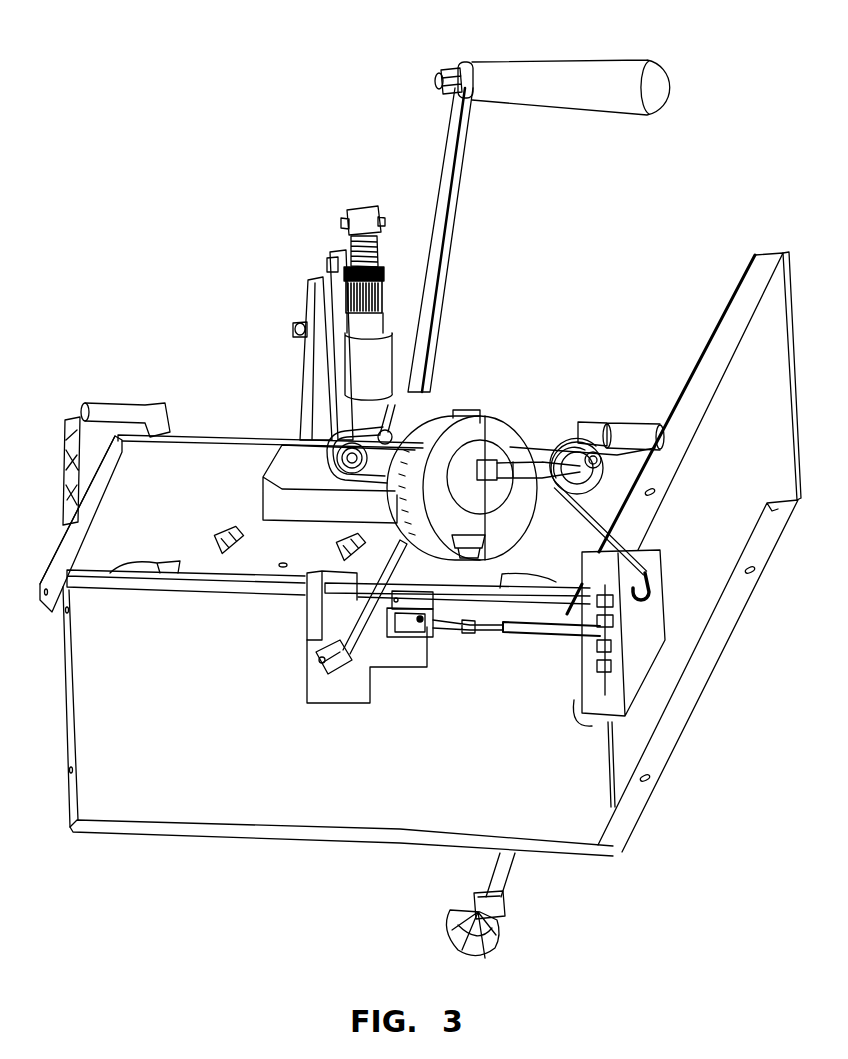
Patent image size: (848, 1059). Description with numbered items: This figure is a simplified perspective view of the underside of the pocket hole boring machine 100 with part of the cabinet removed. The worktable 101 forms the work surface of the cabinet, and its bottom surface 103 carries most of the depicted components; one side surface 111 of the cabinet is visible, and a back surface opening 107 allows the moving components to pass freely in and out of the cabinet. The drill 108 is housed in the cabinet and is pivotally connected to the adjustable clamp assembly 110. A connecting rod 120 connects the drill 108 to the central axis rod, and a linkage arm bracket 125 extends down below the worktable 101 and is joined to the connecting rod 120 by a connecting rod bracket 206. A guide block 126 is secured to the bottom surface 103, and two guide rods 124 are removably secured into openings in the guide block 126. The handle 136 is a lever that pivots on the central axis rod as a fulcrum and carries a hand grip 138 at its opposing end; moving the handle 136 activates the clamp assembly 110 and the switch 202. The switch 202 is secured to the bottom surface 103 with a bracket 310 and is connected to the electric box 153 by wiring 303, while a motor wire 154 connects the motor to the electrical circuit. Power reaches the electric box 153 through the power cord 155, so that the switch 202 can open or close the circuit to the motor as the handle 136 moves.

The pocket hole boring machine 100 is at (138, 140).
The worktable 101 is at (190, 433).
The bottom surface 103 is at (97, 557).
The back surface opening 107 is at (333, 697).
The drill 108 is at (507, 383).
The clamp assembly 110 is at (345, 202).
The side surface 111 is at (753, 360).
The connecting rod 120 is at (343, 652).
The guide rods 124 is at (383, 437).
The linkage arm bracket 125 is at (327, 637).
The guide block 126 is at (297, 457).
The handle 136 is at (444, 175).
The hand grip 138 is at (562, 62).
The electric box 153 is at (628, 687).
The motor wire 154 is at (580, 447).
The power cord 155 is at (497, 943).
The switch 202 is at (417, 633).
The connecting rod bracket 206 is at (313, 663).
The wiring 303 is at (537, 630).
The bracket 310 is at (413, 595).